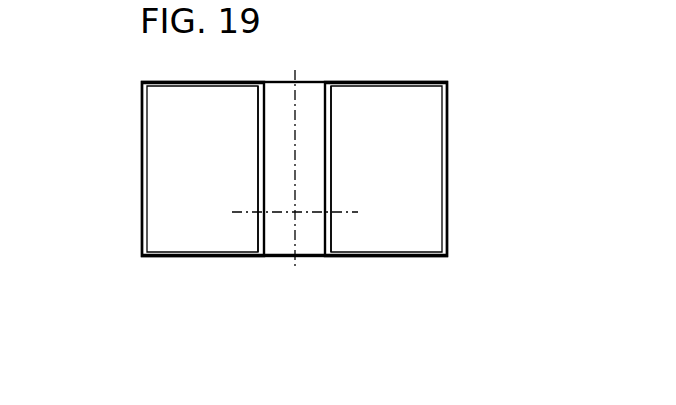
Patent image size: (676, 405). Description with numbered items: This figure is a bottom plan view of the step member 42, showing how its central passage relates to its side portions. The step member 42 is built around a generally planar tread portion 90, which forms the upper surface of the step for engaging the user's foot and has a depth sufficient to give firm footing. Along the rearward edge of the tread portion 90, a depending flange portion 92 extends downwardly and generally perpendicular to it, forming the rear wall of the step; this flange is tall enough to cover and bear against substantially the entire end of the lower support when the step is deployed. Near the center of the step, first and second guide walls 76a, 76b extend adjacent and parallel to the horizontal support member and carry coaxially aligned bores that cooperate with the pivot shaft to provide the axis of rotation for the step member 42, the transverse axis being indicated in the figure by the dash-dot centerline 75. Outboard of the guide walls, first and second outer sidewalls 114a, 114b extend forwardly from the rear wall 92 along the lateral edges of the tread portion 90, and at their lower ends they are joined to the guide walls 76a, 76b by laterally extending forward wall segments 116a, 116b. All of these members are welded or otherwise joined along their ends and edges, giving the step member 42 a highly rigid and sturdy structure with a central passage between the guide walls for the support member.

The step member 42 is at (130, 126).
The first outer sidewall 114a is at (142, 183).
The second outer sidewall 114b is at (447, 180).
The forward wall segment 116a is at (190, 82).
The forward wall segment 116b is at (408, 82).
The tread portion 90 is at (310, 82).
The depending flange portion 92 is at (222, 257).
The first guide wall 76a is at (258, 143).
The second guide wall 76b is at (331, 143).
The axis 75 is at (344, 212).